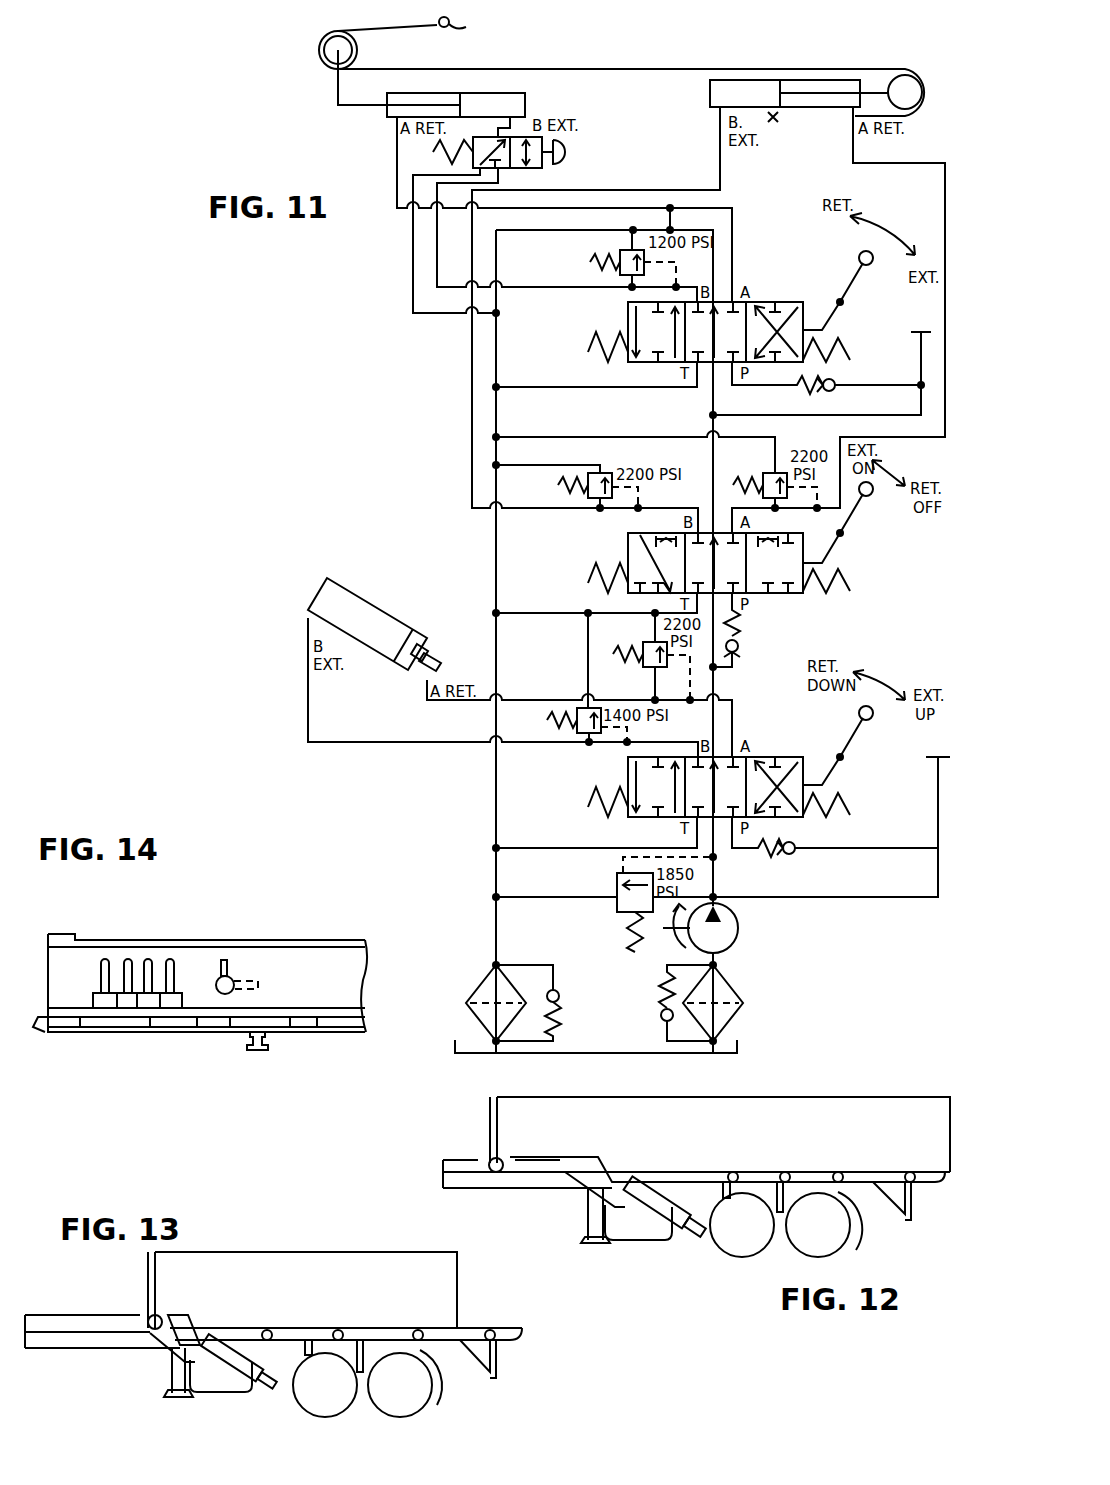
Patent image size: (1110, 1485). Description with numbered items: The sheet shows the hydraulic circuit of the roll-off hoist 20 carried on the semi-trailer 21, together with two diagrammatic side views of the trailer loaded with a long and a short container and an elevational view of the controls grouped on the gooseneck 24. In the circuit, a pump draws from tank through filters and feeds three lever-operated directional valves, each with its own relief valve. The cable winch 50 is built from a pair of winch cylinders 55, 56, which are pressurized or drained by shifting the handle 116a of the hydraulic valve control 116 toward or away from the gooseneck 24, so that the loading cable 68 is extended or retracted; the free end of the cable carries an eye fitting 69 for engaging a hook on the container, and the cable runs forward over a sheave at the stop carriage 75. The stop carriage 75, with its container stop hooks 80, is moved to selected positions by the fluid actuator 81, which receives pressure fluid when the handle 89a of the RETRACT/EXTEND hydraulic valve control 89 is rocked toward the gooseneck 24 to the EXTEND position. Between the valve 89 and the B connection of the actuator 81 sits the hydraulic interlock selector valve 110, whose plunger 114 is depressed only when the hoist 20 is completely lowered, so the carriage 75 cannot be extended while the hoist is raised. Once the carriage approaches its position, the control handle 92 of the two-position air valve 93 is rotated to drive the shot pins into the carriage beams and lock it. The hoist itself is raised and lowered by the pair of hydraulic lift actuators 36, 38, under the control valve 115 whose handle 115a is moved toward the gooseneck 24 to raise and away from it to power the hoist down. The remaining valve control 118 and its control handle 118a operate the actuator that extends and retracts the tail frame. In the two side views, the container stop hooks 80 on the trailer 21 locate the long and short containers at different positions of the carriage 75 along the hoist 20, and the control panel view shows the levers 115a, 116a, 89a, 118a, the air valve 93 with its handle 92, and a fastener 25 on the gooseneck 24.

In FIG. 12, the roll-off hoist 20 is at (812, 1172).
In FIG. 13, the roll-off hoist 20 is at (355, 1327).
In FIG. 12, the semi-trailer 21 is at (543, 1202).
In FIG. 13, the semi-trailer 21 is at (125, 1360).
In FIG. 14, the gooseneck 24 is at (314, 930).
In FIG. 14, the fastener 25 is at (266, 1046).
In FIG. 11, the hydraulic lift actuator 36 is at (372, 601).
In FIG. 11, the hydraulic lift actuator 38 is at (372, 601).
In FIG. 11, the cable winch 50 is at (710, 92).
In FIG. 11, the winch cylinder 55 is at (775, 80).
In FIG. 11, the winch cylinder 56 is at (776, 80).
In FIG. 11, the loading cable 68 is at (458, 69).
In FIG. 11, the eye fitting 69 is at (466, 23).
In FIG. 11, the stop carriage 75 is at (338, 97).
In FIG. 12, the container stop hook 80 is at (492, 1160).
In FIG. 13, the container stop hook 80 is at (148, 1320).
In FIG. 11, the fluid actuator 81 is at (527, 101).
In FIG. 11, the RETRACT/EXTEND hydraulic valve control 89 is at (628, 318).
In FIG. 14, the RETRACT/EXTEND hydraulic valve control 89 is at (148, 1005).
In FIG. 11, the handle of control valve 89a is at (860, 252).
In FIG. 14, the handle of control valve 89a is at (148, 960).
In FIG. 14, the shot pin actuator 92 is at (226, 962).
In FIG. 14, the two-position air valve 93 is at (232, 985).
In FIG. 11, the hydraulic interlock selector valve 110 is at (553, 164).
In FIG. 11, the plunger 114 is at (575, 151).
In FIG. 11, the control valve 115 is at (628, 774).
In FIG. 14, the control valve 115 is at (105, 1005).
In FIG. 11, the handle of control valve 115a is at (866, 722).
In FIG. 14, the handle of control valve 115a is at (104, 960).
In FIG. 11, the hydraulic valve control 116 is at (628, 549).
In FIG. 14, the hydraulic valve control 116 is at (126, 1005).
In FIG. 11, the handle of hydraulic valve control 116a is at (868, 498).
In FIG. 14, the handle of hydraulic valve control 116a is at (128, 960).
In FIG. 14, the valve control 118 is at (170, 1005).
In FIG. 14, the control handle 118a is at (170, 960).